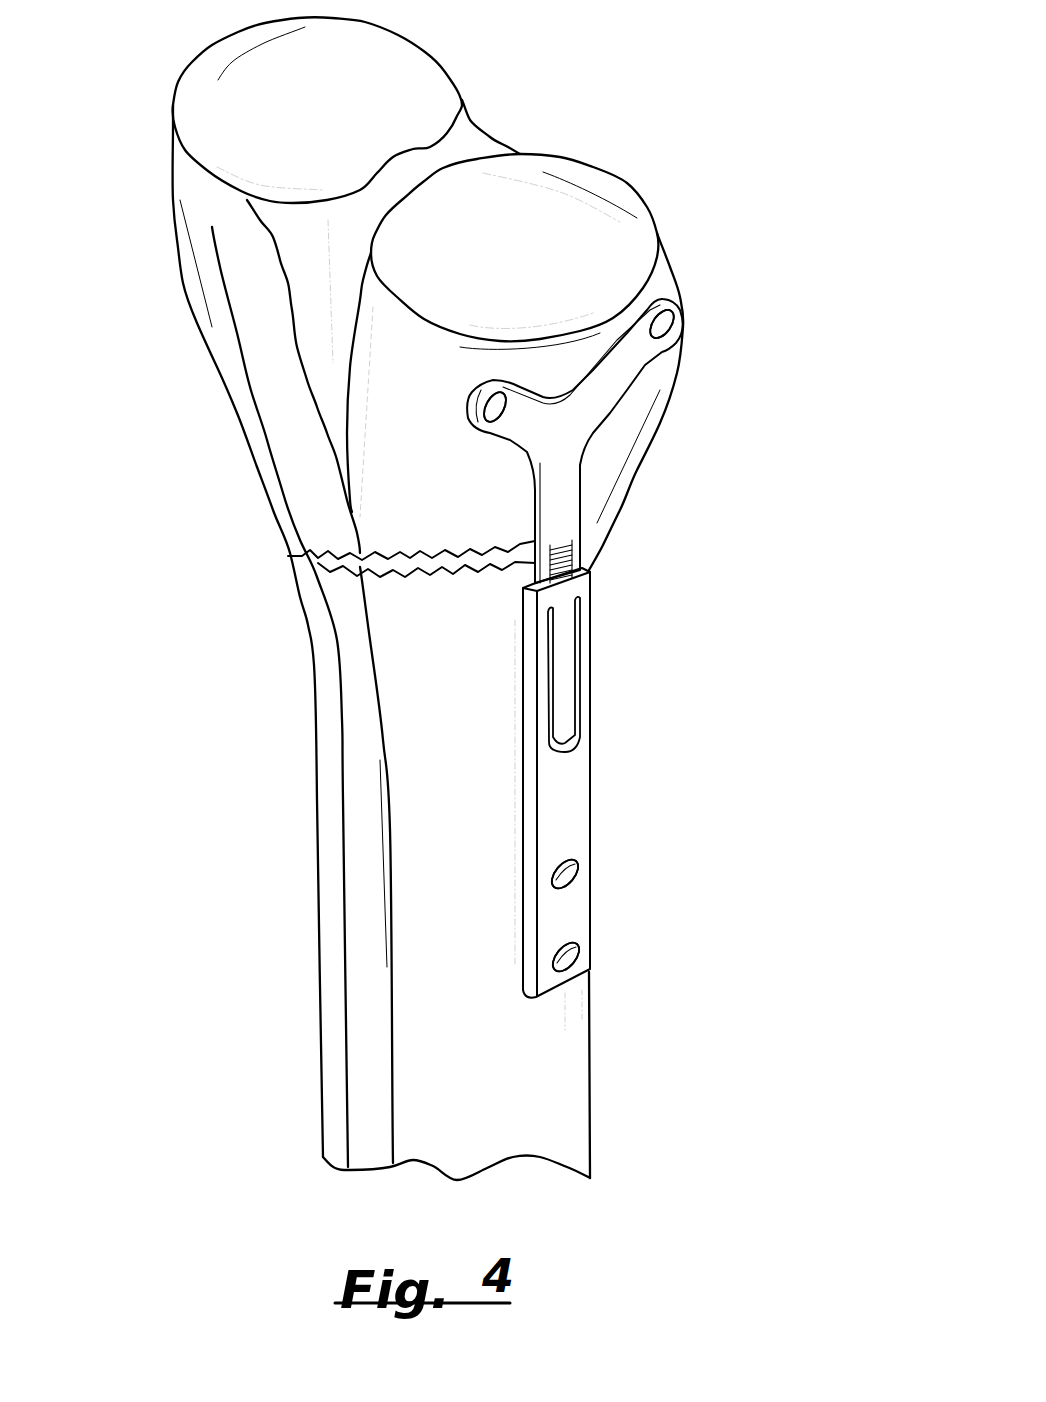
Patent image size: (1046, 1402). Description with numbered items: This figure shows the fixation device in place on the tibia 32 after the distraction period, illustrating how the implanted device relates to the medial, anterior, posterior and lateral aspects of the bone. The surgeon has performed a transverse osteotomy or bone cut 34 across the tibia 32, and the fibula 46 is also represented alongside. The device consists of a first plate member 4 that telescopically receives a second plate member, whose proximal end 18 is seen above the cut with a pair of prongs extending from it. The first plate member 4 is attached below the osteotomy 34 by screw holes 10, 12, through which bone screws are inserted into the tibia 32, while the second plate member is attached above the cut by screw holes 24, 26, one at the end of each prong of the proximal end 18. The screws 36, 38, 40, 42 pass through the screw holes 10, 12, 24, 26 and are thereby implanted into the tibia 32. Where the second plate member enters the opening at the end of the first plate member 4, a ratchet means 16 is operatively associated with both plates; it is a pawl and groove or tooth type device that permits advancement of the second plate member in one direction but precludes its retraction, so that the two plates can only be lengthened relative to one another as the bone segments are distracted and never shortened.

The first plate member 4 is at (583, 806).
The screw hole 10 is at (580, 878).
The screw hole 12 is at (580, 964).
The ratchet means 16 is at (607, 710).
The proximal end 18 is at (673, 378).
The screw hole 24 is at (503, 408).
The screw hole 26 is at (678, 346).
The tibia 32 is at (288, 408).
The osteotomy 34 is at (453, 565).
The screw 36 is at (728, 951).
The screw 38 is at (723, 864).
The screw 40 is at (652, 474).
The screw 42 is at (773, 299).
The fibula 46 is at (263, 480).